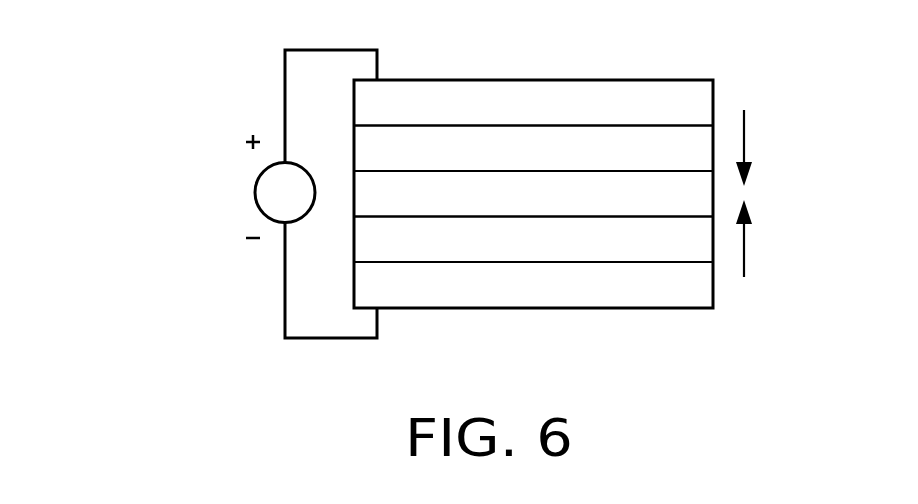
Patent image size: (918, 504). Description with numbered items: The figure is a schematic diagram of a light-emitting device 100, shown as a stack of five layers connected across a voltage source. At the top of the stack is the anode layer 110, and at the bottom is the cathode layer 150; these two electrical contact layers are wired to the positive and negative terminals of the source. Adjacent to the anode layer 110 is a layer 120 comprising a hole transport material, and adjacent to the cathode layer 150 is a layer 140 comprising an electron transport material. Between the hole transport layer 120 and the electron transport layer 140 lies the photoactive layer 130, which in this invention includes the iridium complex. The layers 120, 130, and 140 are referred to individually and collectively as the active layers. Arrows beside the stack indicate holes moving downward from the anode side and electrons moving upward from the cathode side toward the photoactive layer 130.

The device 100 is at (240, 71).
The anode layer 110 is at (535, 102).
The hole transport layer 120 is at (617, 140).
The photoactive layer 130 is at (665, 193).
The electron transport layer 140 is at (590, 248).
The cathode layer 150 is at (512, 287).